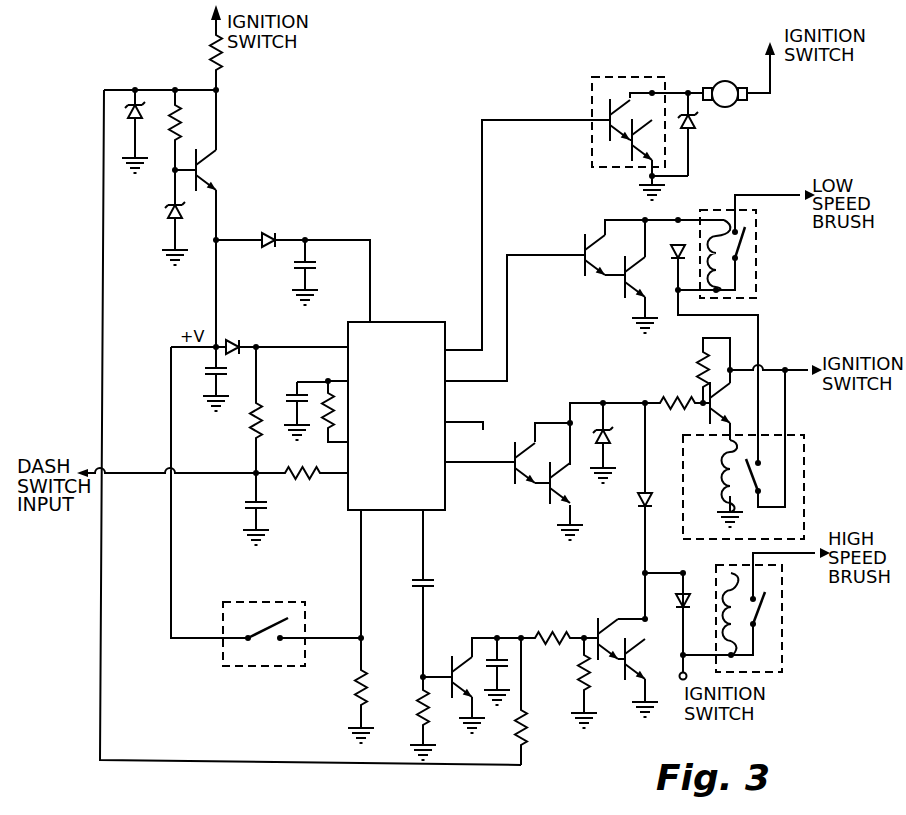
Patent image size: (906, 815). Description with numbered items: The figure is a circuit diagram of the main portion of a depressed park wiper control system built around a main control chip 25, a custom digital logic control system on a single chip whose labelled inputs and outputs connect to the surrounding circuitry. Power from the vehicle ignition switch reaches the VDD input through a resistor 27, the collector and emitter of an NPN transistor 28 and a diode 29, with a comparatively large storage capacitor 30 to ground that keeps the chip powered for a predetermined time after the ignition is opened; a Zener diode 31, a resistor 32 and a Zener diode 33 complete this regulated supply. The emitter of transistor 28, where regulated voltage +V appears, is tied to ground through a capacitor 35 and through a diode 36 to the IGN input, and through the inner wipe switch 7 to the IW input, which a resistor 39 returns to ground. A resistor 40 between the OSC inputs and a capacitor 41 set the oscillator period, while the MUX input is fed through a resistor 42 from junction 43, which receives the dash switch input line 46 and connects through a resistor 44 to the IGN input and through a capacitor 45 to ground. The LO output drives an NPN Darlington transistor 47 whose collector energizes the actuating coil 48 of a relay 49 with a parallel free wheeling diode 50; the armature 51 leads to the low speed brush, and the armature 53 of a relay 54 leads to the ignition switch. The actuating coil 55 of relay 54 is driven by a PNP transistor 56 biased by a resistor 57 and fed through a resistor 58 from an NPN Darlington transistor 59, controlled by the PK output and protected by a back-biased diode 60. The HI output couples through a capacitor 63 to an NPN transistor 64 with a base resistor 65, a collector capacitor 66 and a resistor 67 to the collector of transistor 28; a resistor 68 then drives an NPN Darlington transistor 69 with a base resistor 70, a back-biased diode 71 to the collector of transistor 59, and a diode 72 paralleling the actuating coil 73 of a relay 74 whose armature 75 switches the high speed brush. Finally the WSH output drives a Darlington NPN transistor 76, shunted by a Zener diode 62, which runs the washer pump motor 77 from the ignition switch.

The inner wipe switch 7 is at (270, 630).
The main control chip 25 is at (452, 515).
The resistor 27 is at (212, 55).
The NPN transistor 28 is at (212, 160).
The diode 29 is at (268, 232).
The capacitor 30 is at (316, 264).
The Zener diode 31 is at (128, 115).
The resistor 32 is at (182, 135).
The Zener diode 33 is at (166, 215).
The capacitor 35 is at (208, 380).
The diode 36 is at (230, 338).
The resistor 39 is at (356, 680).
The resistor 40 is at (322, 415).
The capacitor 41 is at (290, 394).
The resistor 42 is at (308, 480).
The junction 43 is at (248, 478).
The resistor 44 is at (250, 415).
The capacitor 45 is at (264, 535).
The dash switch input line 46 is at (138, 478).
The NPN Darlington transistor 47 is at (610, 240).
The actuating coil 48 is at (722, 230).
The relay 49 is at (772, 280).
The free wheeling diode 50 is at (670, 250).
The armature 51 is at (756, 250).
The armature 53 is at (770, 480).
The relay 54 is at (812, 440).
The actuating coil 55 is at (722, 470).
The PNP transistor 56 is at (718, 412).
The resistor 57 is at (700, 368).
The resistor 58 is at (684, 410).
The NPN Darlington transistor 59 is at (542, 460).
The back-biased diode 60 is at (612, 442).
The Zener diode 62 is at (700, 135).
The capacitor 63 is at (435, 580).
The NPN transistor 64 is at (452, 660).
The resistor 65 is at (418, 705).
The capacitor 66 is at (500, 655).
The resistor 67 is at (530, 732).
The resistor 68 is at (550, 632).
The NPN Darlington transistor 69 is at (613, 635).
The resistor 70 is at (580, 685).
The back-biased diode 71 is at (638, 503).
The diode 72 is at (675, 603).
The actuating coil 73 is at (722, 603).
The relay 74 is at (792, 656).
The armature 75 is at (768, 612).
The Darlington NPN transistor 76 is at (600, 108).
The washer pump motor 77 is at (725, 88).